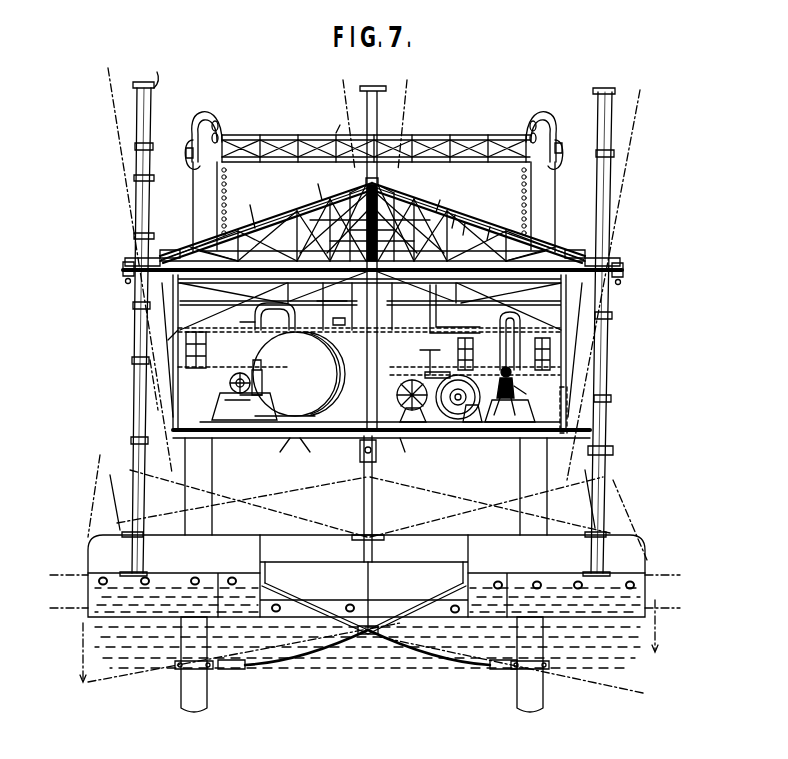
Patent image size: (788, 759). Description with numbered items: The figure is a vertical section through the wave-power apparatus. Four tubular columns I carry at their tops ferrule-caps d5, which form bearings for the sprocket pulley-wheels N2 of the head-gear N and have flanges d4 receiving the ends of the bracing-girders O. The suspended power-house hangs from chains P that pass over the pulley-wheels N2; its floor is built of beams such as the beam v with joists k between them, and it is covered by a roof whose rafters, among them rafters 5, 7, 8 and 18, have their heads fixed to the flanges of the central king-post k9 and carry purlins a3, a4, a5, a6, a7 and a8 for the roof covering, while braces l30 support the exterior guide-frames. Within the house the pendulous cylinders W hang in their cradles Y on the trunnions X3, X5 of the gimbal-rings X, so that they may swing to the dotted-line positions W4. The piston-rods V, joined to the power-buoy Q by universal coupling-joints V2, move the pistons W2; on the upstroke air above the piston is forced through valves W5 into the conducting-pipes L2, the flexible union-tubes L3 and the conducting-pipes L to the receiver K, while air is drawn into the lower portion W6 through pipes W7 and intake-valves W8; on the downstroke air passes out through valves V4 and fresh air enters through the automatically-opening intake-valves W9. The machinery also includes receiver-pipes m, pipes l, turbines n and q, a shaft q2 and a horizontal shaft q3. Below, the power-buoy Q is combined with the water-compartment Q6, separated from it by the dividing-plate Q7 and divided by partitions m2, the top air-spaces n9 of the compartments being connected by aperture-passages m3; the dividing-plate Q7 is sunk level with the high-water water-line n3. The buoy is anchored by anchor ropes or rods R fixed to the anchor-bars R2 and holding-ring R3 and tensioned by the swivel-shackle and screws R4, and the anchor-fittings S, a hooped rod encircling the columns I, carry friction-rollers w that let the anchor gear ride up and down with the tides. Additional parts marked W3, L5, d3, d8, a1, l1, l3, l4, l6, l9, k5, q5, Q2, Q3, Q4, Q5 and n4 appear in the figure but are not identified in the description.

The pendulous cylinder W is at (137, 114).
The piston W2 is at (135, 147).
The column fitting W3 is at (613, 449).
The dotted-line position of pendulous cylinder W4 is at (380, 274).
The valves W5 is at (158, 80).
The lower portion of pendulous cylinder W6 is at (132, 361).
The pipes W7 is at (133, 305).
The intake-valves W8 is at (131, 441).
The automatically-opening intake-valves W9 is at (135, 85).
The piston-rod V is at (612, 191).
The universal coupling-joint V2 is at (115, 495).
The valves V4 is at (585, 478).
The cradle Y is at (134, 178).
The gimbal-ring X is at (125, 261).
The trunnion X3 is at (125, 281).
The trunnion X5 is at (123, 272).
The conducting-pipes L is at (434, 305).
The conducting-pipes L2 is at (151, 181).
The flexible metallic union-tubes L3 is at (372, 244).
The cabin brace L5 is at (205, 314).
The tubular column I is at (193, 207).
The bracing-girders O is at (273, 140).
The head-gear N is at (205, 112).
The sprocket pulley-wheel N2 is at (219, 138).
The chain P is at (227, 173).
The suspension rod d3 is at (531, 248).
The flanges d4 is at (186, 150).
The ferrule-caps d5 is at (186, 155).
The roof member d8 is at (456, 215).
The roof rafter a1 is at (186, 250).
The purlin a3 is at (208, 246).
The purlin a4 is at (245, 237).
The purlin a5 is at (275, 225).
The purlin a6 is at (306, 220).
The purlin a7 is at (345, 197).
The purlin a8 is at (371, 174).
The rafter 5 is at (317, 185).
The rafter 7 is at (441, 199).
The rafter 8 is at (465, 222).
The rafter 18 is at (372, 215).
The central king-post k9 is at (330, 124).
The pipes l is at (258, 345).
The valve pipe l1 is at (326, 306).
The window l3 is at (472, 340).
The window l4 is at (545, 338).
The wall member l6 is at (168, 340).
The brace l9 is at (262, 299).
The braces l30 is at (249, 317).
The beam v is at (170, 345).
The receiver-pipes m is at (430, 318).
The joists k is at (420, 350).
The floor bracket k5 is at (303, 445).
The receiver K is at (330, 372).
The anchor-fittings S is at (230, 383).
The turbine q is at (262, 375).
The shaft q2 is at (262, 385).
The horizontal shaft q3 is at (502, 370).
The pump rod q5 is at (258, 398).
The power-buoy Q is at (440, 548).
The hull tilted position Q2 is at (536, 482).
The hull lower tilted position Q3 is at (365, 658).
The hull corner tilted Q4 is at (110, 470).
The hull displacement Q5 is at (367, 641).
The water-compartment Q6 is at (366, 595).
The dividing-plate Q7 is at (350, 560).
The partitions m2 is at (262, 550).
The aperture-passages m3 is at (175, 583).
The turbine n is at (69, 598).
The water-line n3 is at (365, 566).
The water line n4 is at (662, 600).
The top air-space of water-compartment n9 is at (103, 576).
The anchor ropes or rods R is at (280, 665).
The anchor-bars R2 is at (310, 602).
The holding-ring R3 is at (367, 636).
The swivel-shackle and screws R4 is at (240, 670).
The friction-rollers w is at (360, 456).